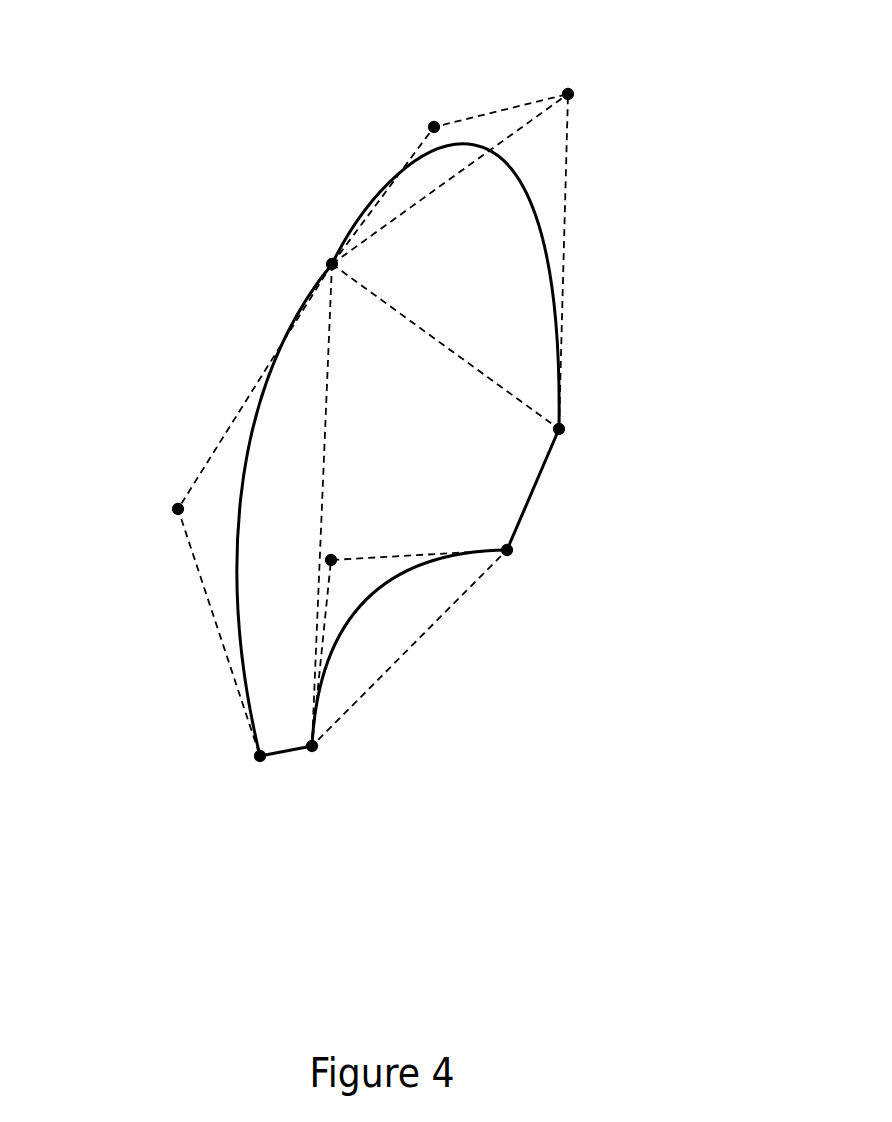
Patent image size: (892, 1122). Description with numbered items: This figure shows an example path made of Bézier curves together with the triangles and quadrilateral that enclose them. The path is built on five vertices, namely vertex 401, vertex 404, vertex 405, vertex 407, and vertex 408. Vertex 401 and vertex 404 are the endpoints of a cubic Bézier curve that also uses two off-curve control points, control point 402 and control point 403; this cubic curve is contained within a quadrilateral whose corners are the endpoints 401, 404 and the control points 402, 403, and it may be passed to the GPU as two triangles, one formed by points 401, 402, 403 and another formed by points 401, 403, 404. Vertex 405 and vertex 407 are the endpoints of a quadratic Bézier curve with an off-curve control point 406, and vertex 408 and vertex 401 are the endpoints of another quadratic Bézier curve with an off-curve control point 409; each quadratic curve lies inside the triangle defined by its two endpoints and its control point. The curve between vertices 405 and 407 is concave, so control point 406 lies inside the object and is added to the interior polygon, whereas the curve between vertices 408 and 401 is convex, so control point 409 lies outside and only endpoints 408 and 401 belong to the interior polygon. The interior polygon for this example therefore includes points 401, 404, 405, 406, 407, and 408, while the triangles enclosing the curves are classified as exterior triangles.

The vertex 401 is at (328, 255).
The control point 402 is at (434, 118).
The control point 403 is at (568, 84).
The vertex 404 is at (564, 443).
The vertex 405 is at (518, 558).
The control point 406 is at (331, 548).
The vertex 407 is at (318, 757).
The vertex 408 is at (253, 763).
The control point 409 is at (170, 516).